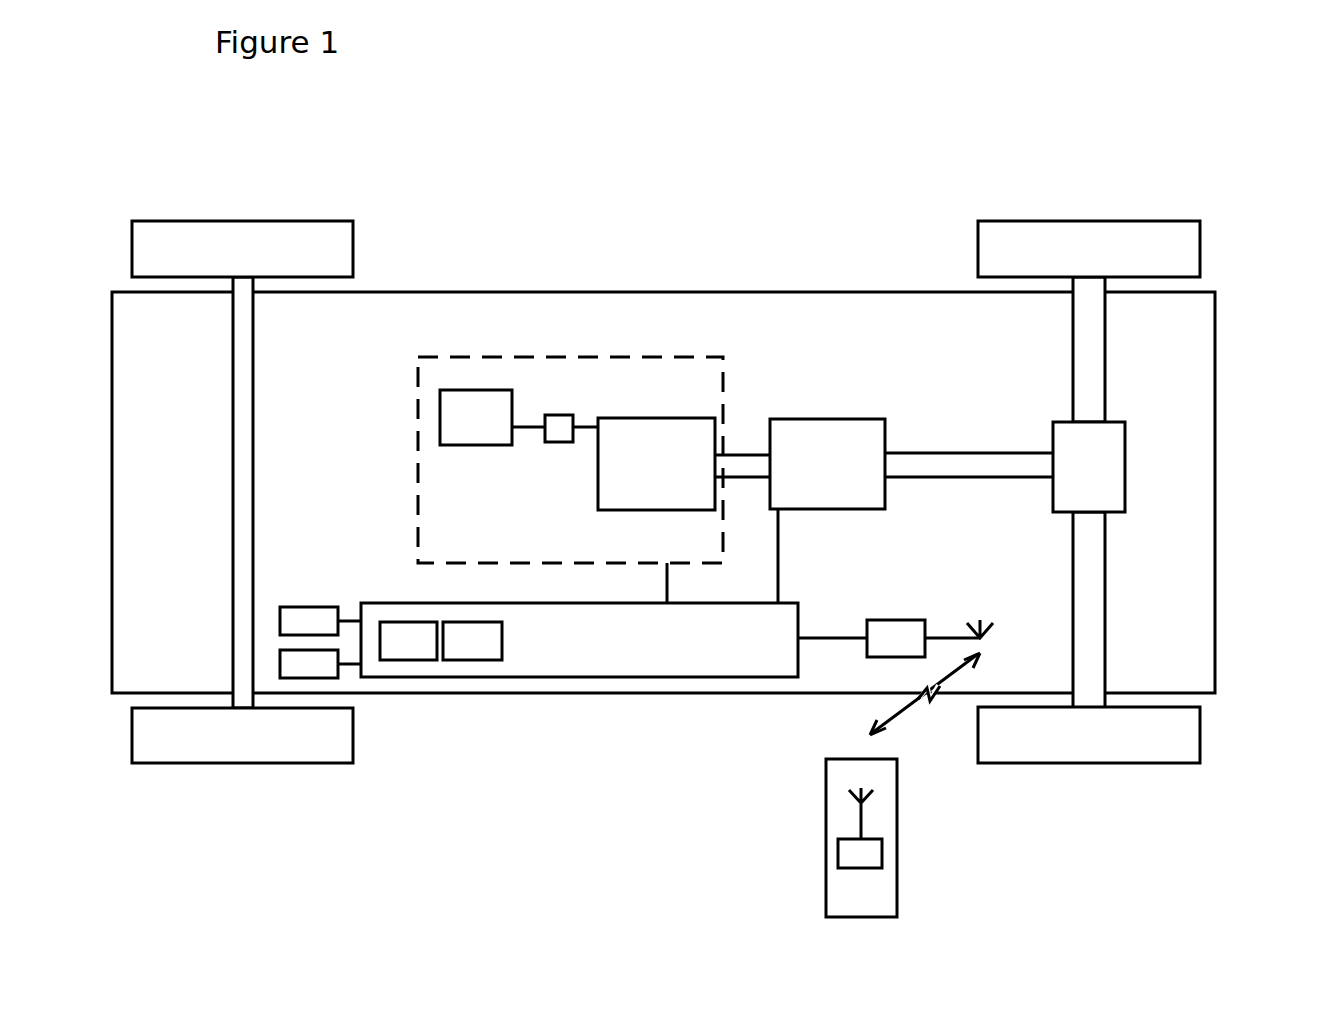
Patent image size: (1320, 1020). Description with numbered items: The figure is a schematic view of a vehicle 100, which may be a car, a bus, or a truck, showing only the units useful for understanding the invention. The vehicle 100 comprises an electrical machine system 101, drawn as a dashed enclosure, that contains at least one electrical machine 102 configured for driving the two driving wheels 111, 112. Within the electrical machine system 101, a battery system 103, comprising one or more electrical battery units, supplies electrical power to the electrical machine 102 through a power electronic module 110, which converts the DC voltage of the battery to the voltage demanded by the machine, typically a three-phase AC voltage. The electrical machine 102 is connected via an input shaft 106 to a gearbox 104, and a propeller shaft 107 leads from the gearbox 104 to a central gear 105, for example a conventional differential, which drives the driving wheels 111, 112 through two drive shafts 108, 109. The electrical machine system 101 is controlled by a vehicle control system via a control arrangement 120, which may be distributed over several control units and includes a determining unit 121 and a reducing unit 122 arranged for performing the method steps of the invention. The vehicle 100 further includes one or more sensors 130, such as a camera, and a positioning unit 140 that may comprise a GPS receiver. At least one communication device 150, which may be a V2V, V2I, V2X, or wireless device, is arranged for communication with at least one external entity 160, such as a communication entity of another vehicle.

The vehicle 100 is at (622, 88).
The electrical machine system 101 is at (625, 372).
The electrical machine 102 is at (660, 440).
The battery system 103 is at (468, 398).
The gearbox 104 is at (829, 430).
The central gear 105 is at (1110, 465).
The input shaft 106 is at (745, 465).
The propeller shaft 107 is at (960, 465).
The drive shaft 108 is at (1098, 620).
The drive shaft 109 is at (1092, 386).
The power electronic module 110 is at (557, 428).
The driving wheel 111 is at (1200, 739).
The driving wheel 112 is at (1195, 237).
The control arrangement 120 is at (579, 640).
The determining unit 121 is at (408, 641).
The reducing unit 122 is at (472, 641).
The sensor 130 is at (320, 621).
The positioning unit 140 is at (320, 664).
The communication device 150 is at (895, 677).
The external entity 160 is at (843, 905).